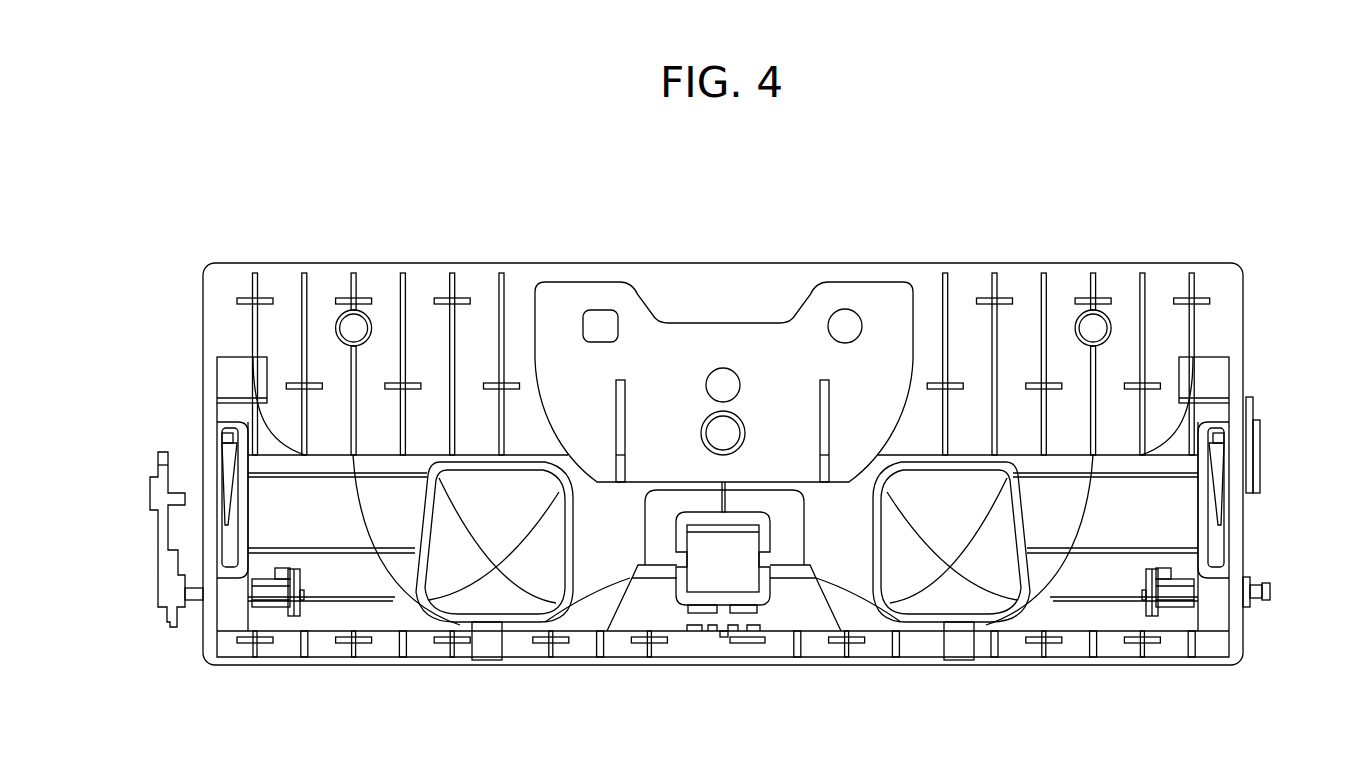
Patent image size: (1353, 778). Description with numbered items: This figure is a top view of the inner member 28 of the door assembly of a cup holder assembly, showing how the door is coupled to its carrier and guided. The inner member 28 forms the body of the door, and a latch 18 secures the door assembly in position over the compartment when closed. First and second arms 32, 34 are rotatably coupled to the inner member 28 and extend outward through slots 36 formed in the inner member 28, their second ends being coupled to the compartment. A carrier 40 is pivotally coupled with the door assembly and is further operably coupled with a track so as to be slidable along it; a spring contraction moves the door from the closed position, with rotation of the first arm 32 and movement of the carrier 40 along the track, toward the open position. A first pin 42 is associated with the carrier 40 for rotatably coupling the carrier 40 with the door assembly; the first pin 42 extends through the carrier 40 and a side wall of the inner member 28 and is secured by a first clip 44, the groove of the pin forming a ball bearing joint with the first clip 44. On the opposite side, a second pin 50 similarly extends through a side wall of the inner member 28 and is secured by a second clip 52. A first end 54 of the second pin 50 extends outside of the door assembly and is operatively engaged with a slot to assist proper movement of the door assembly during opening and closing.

The latch 18 is at (738, 263).
The inner member 28 is at (492, 359).
The first arm 32 is at (223, 462).
The second arm 34 is at (1222, 462).
The slots 36 is at (1228, 540).
The carrier 40 is at (155, 590).
The first pin 42 is at (190, 602).
The first clip 44 is at (292, 613).
The second pin 50 is at (1255, 605).
The second clip 52 is at (1177, 593).
The first end 54 is at (1270, 588).